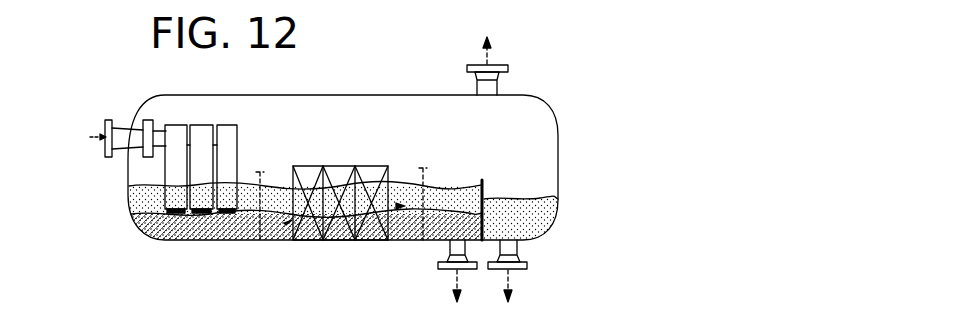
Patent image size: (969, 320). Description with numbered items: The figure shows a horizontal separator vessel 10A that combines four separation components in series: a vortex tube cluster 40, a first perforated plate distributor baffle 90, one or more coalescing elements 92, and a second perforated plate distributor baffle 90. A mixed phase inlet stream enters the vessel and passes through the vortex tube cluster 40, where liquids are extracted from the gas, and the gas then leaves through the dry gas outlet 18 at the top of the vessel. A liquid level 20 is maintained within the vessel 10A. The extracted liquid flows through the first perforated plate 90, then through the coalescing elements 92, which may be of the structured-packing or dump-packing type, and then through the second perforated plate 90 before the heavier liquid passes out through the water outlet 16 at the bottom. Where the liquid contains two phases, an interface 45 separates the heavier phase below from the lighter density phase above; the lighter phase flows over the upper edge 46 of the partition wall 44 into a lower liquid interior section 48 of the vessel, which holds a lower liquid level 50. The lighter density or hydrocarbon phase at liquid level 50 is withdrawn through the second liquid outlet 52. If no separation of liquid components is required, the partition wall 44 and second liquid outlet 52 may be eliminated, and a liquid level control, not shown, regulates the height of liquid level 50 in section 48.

The horizontal separator vessel 10A is at (290, 95).
The dry gas outlet 18 is at (492, 66).
The vortex tube cluster 40 is at (257, 141).
The interface 45 is at (245, 213).
The perforated plate distributor baffle 90 is at (393, 240).
The coalescing elements 92 is at (352, 166).
The liquid level 20 is at (467, 180).
The upper edge of partition wall 46 is at (483, 180).
The lower liquid level 50 is at (515, 197).
The lower liquid interior section 48 is at (528, 213).
The partition wall 44 is at (452, 210).
The liquid outlet 16 is at (447, 270).
The second liquid outlet 52 is at (513, 245).